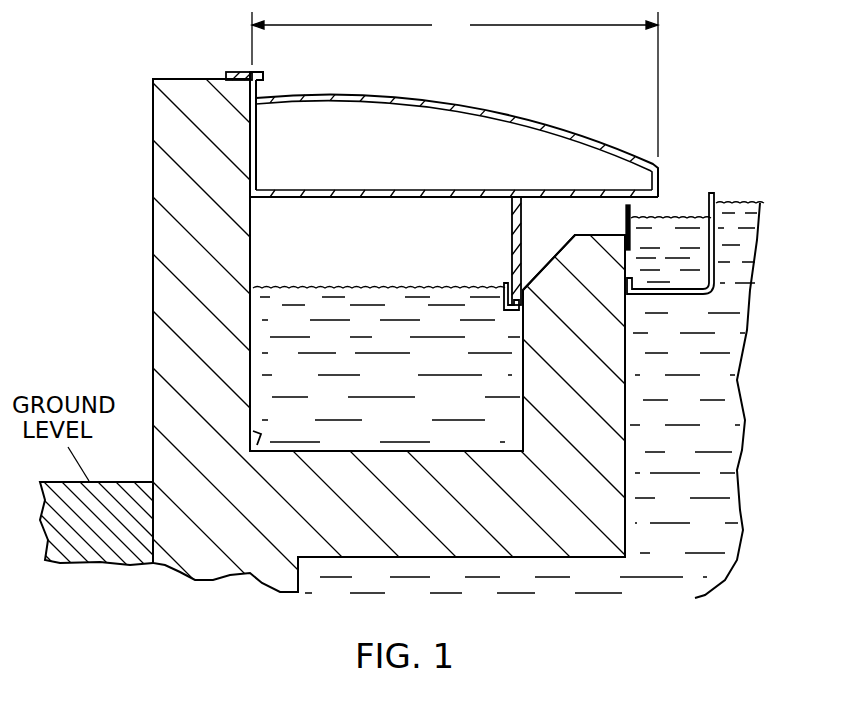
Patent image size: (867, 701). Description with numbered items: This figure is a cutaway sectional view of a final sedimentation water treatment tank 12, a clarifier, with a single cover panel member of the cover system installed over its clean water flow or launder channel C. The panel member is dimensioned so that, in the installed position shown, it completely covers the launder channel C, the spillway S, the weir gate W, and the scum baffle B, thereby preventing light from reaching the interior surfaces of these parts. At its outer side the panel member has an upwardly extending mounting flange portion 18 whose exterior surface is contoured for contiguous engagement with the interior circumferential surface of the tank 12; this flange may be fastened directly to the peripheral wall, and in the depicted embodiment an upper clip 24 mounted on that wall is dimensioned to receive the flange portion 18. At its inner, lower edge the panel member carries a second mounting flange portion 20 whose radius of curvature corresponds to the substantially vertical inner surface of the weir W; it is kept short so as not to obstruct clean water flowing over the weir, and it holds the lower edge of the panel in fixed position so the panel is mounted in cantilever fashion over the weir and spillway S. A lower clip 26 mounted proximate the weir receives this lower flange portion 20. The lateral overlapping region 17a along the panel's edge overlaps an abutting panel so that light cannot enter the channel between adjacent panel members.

The final sedimentation water treatment tank 12 is at (160, 172).
The upper clip 24 is at (248, 76).
The mounting flange portion 18 is at (257, 88).
The lateral overlapping region 17a is at (359, 198).
The second mounting flange portion 20 is at (511, 221).
The lower clip 26 is at (505, 287).
The weir gate W is at (704, 185).
The launder channel C is at (255, 434).
The spillway S is at (565, 250).
The scum baffle B is at (713, 265).